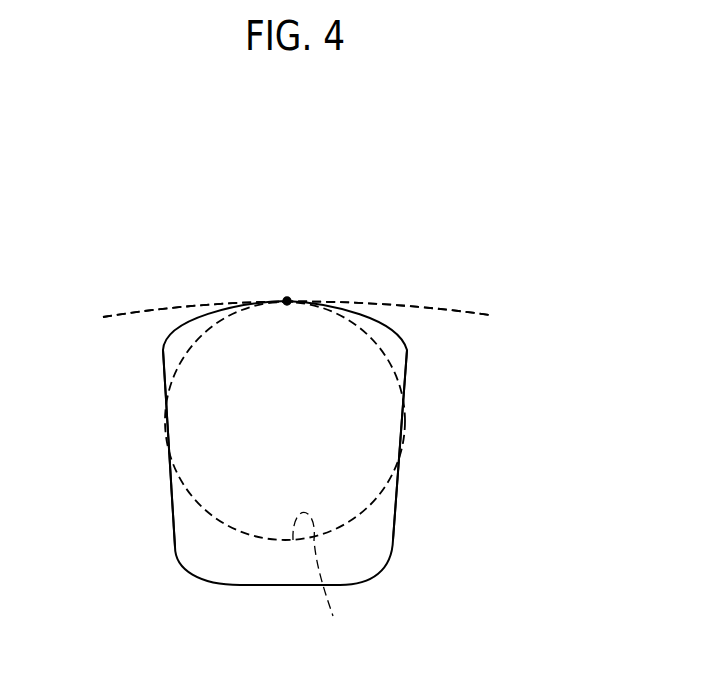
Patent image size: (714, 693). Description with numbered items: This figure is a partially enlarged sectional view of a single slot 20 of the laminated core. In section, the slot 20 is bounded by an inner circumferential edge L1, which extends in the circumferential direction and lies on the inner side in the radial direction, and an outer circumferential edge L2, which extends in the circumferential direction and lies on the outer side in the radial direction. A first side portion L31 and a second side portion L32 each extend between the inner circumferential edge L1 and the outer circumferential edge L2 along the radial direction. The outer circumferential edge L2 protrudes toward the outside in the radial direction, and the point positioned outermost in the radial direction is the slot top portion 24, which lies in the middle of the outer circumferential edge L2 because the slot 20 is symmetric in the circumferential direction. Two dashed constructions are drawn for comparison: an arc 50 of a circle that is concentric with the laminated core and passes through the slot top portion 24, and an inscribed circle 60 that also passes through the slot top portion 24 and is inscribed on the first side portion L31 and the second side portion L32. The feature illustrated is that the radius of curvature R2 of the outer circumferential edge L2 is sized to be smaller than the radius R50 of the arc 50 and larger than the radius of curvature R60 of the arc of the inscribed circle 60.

The slot 20 is at (370, 548).
The slot top portion 24 is at (288, 298).
The arc 50 is at (447, 305).
The inscribed circle 60 is at (285, 479).
The inner circumferential edge L1 is at (240, 585).
The outer circumferential edge L2 is at (213, 311).
The first side portion L31 is at (170, 479).
The second side portion L32 is at (397, 496).
The radius of curvature of the outer circumferential edge R2 is at (287, 305).
The radius of the arc R50 is at (465, 316).
The radius of curvature of the inscribed circle R60 is at (372, 502).